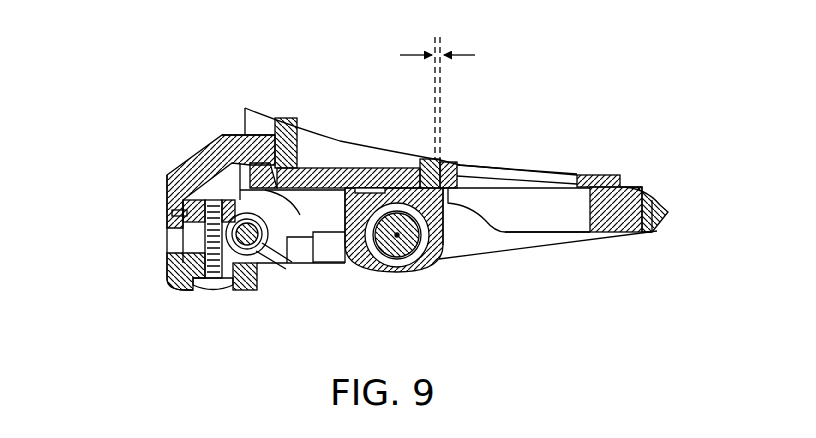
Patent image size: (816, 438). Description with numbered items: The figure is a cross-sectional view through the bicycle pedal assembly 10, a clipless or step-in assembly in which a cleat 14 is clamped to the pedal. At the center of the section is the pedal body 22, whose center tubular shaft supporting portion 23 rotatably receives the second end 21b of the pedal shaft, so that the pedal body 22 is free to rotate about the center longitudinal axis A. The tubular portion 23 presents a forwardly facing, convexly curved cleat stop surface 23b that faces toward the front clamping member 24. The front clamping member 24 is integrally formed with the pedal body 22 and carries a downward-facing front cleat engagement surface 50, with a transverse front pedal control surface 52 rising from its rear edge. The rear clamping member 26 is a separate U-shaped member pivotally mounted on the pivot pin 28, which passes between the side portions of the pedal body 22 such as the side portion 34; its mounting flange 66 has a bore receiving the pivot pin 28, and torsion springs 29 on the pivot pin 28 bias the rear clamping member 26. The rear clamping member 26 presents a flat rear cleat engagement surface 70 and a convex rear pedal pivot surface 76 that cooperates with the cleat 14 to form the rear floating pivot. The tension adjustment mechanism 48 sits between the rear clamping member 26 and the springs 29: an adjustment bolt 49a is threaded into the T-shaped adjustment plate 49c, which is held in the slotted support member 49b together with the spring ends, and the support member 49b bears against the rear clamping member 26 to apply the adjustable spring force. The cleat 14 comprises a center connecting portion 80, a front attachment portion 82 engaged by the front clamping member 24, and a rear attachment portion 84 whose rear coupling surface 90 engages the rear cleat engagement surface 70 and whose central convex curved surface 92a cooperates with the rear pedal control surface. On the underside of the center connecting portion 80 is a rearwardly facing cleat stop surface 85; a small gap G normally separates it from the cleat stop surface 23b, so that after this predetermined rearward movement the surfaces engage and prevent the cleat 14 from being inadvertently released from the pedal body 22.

The bicycle pedal assembly 10 is at (632, 127).
The cleat 14 is at (453, 156).
The second end 21b is at (441, 255).
The pedal body 22 is at (578, 246).
The center tubular shaft supporting portion 23 is at (398, 273).
The cleat stop surface 23b is at (458, 244).
The front clamping member 24 is at (661, 185).
The rear clamping member 26 is at (172, 157).
The pivot pin 28 is at (265, 258).
The torsion springs 29 is at (300, 205).
The side portion 34 is at (516, 243).
The tension adjustment mechanism 48 is at (186, 298).
The adjustment bolt 49a is at (215, 292).
The support member 49b is at (190, 226).
The adjustment plate 49c is at (180, 213).
The front cleat engagement surface 50 is at (670, 209).
The front pedal control surface 52 is at (598, 175).
The mounting flange 66 is at (280, 217).
The rear cleat engagement surface 70 is at (292, 165).
The rear pedal pivot surface 76 is at (284, 120).
The center connecting portion 80 is at (402, 149).
The front attachment portion 82 is at (651, 242).
The rear attachment portion 84 is at (237, 111).
The cleat stop surface 85 is at (426, 164).
The rear coupling surface 90 is at (222, 135).
The central convex curved surface 92a is at (252, 116).
The center longitudinal axis A is at (368, 262).
The gap G is at (437, 84).